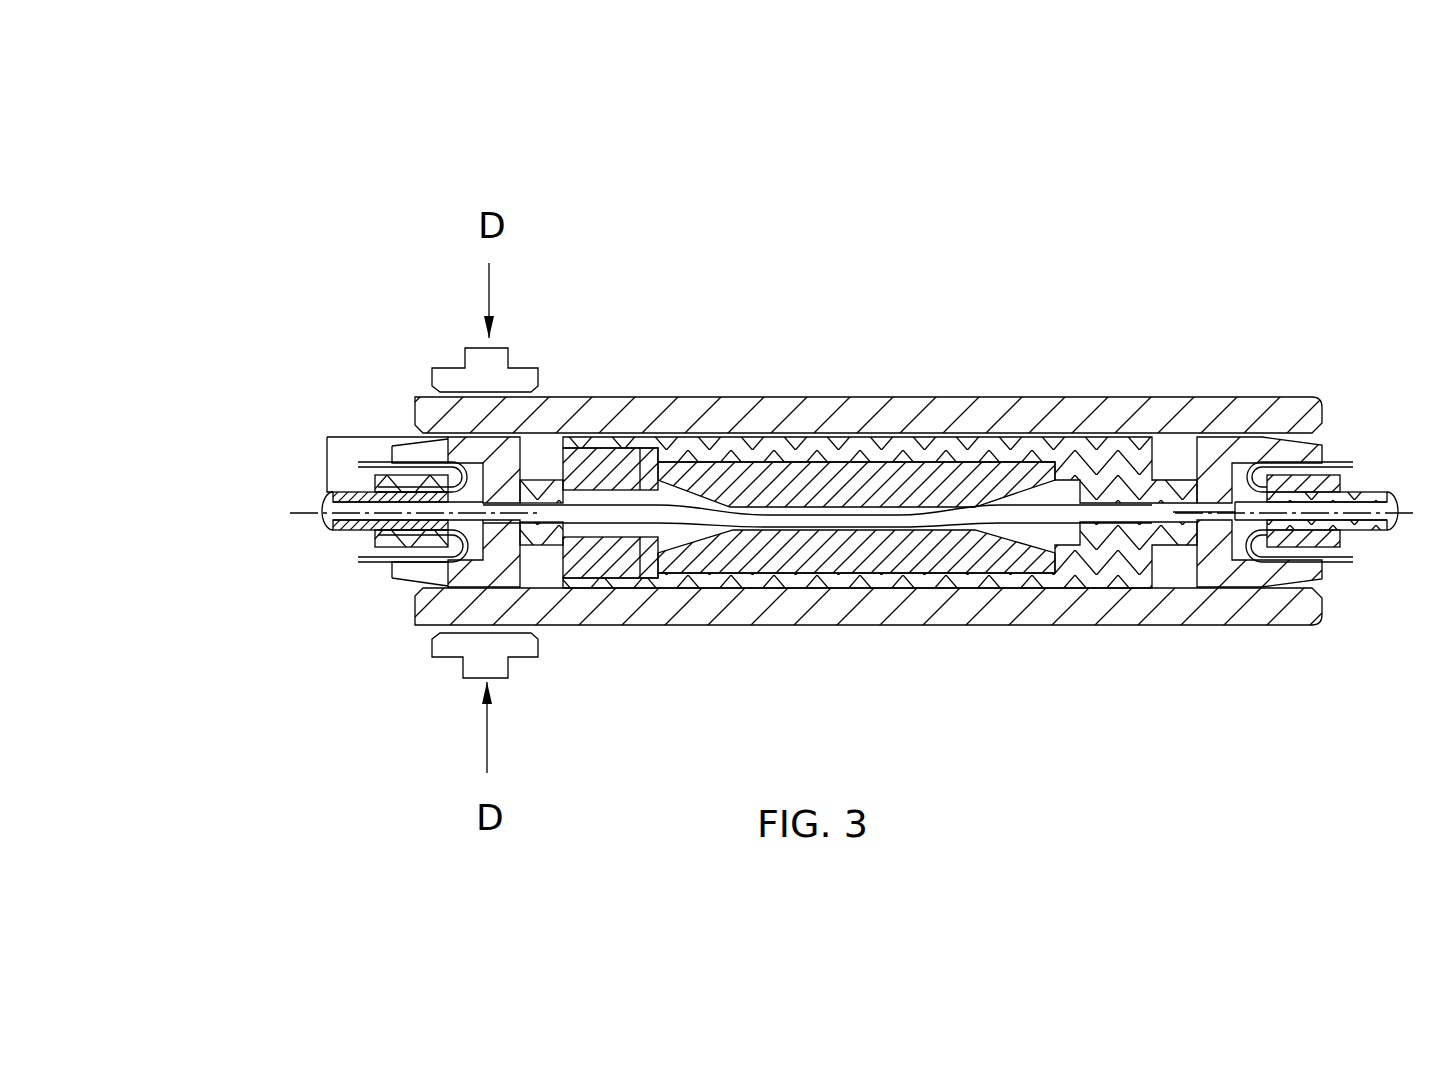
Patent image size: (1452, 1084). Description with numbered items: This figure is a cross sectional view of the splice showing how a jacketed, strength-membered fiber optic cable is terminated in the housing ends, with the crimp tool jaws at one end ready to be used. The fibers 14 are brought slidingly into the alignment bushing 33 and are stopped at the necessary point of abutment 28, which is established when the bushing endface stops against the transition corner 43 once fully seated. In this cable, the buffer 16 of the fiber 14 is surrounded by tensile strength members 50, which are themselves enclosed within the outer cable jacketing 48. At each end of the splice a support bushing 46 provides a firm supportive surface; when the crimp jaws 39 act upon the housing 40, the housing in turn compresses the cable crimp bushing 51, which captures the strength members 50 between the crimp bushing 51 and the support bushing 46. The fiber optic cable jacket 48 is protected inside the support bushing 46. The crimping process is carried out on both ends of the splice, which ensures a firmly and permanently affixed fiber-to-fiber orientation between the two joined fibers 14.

The fiber 14 is at (695, 514).
The buffer 16 is at (464, 502).
The point of abutment 28 is at (858, 515).
The alignment bushing 33 is at (767, 480).
The crimp jaws 39 is at (480, 373).
The housing 40 is at (675, 412).
The transition corner 43 is at (1079, 495).
The support bushing 46 is at (370, 482).
The outer cable jacketing 48 is at (333, 532).
The tensile strength members 50 is at (387, 463).
The cable crimp bushing 51 is at (503, 573).